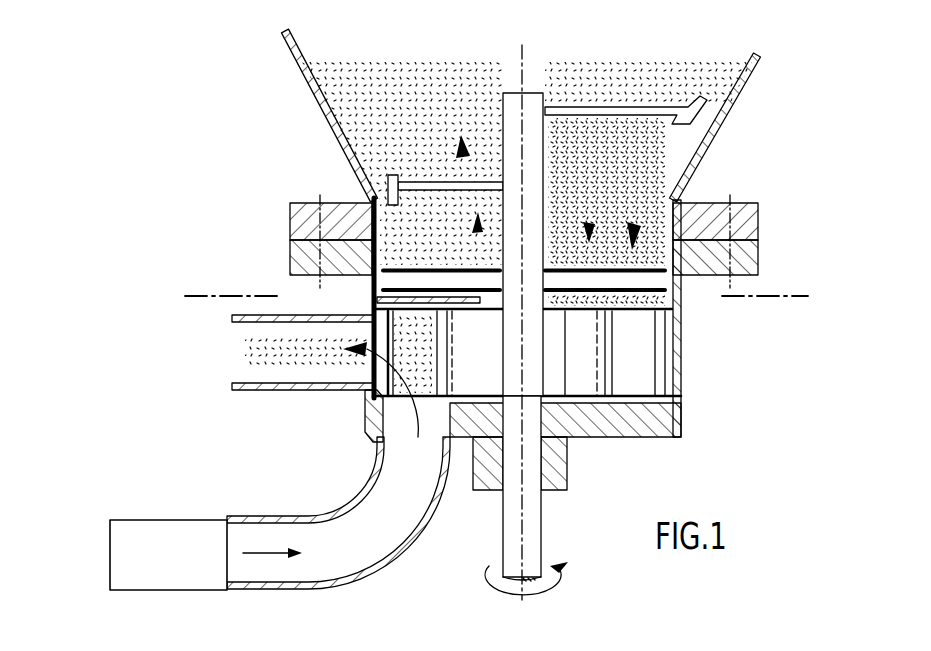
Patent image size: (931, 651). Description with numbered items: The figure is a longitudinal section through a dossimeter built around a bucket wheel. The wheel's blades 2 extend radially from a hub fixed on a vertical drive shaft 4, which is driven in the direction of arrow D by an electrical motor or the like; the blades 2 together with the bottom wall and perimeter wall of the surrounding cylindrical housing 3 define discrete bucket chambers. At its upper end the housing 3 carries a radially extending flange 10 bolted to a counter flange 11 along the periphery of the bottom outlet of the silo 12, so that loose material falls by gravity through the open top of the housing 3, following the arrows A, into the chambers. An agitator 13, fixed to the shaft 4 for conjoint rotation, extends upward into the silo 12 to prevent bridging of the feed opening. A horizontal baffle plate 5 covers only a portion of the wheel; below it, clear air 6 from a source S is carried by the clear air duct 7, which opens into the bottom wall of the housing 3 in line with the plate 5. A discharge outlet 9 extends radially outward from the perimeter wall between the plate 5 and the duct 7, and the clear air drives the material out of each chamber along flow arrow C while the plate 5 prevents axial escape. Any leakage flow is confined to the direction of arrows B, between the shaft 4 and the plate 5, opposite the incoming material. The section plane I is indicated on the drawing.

The blades 2 is at (639, 350).
The cylindrical housing 3 is at (678, 387).
The vertical drive shaft 4 is at (530, 535).
The plate 5 is at (367, 300).
The clear air 6 is at (262, 540).
The clear air duct 7 is at (283, 588).
The discharge outlet 9 is at (287, 393).
The flange 10 is at (750, 252).
The counter flange 11 is at (733, 210).
The silo 12 is at (750, 82).
The agitator 13 is at (574, 108).
The arrows A is at (589, 222).
The arrows B is at (480, 257).
The flow arrow C is at (388, 448).
The arrow D is at (545, 595).
The air pressure source S is at (130, 533).
The section line I is at (493, 298).